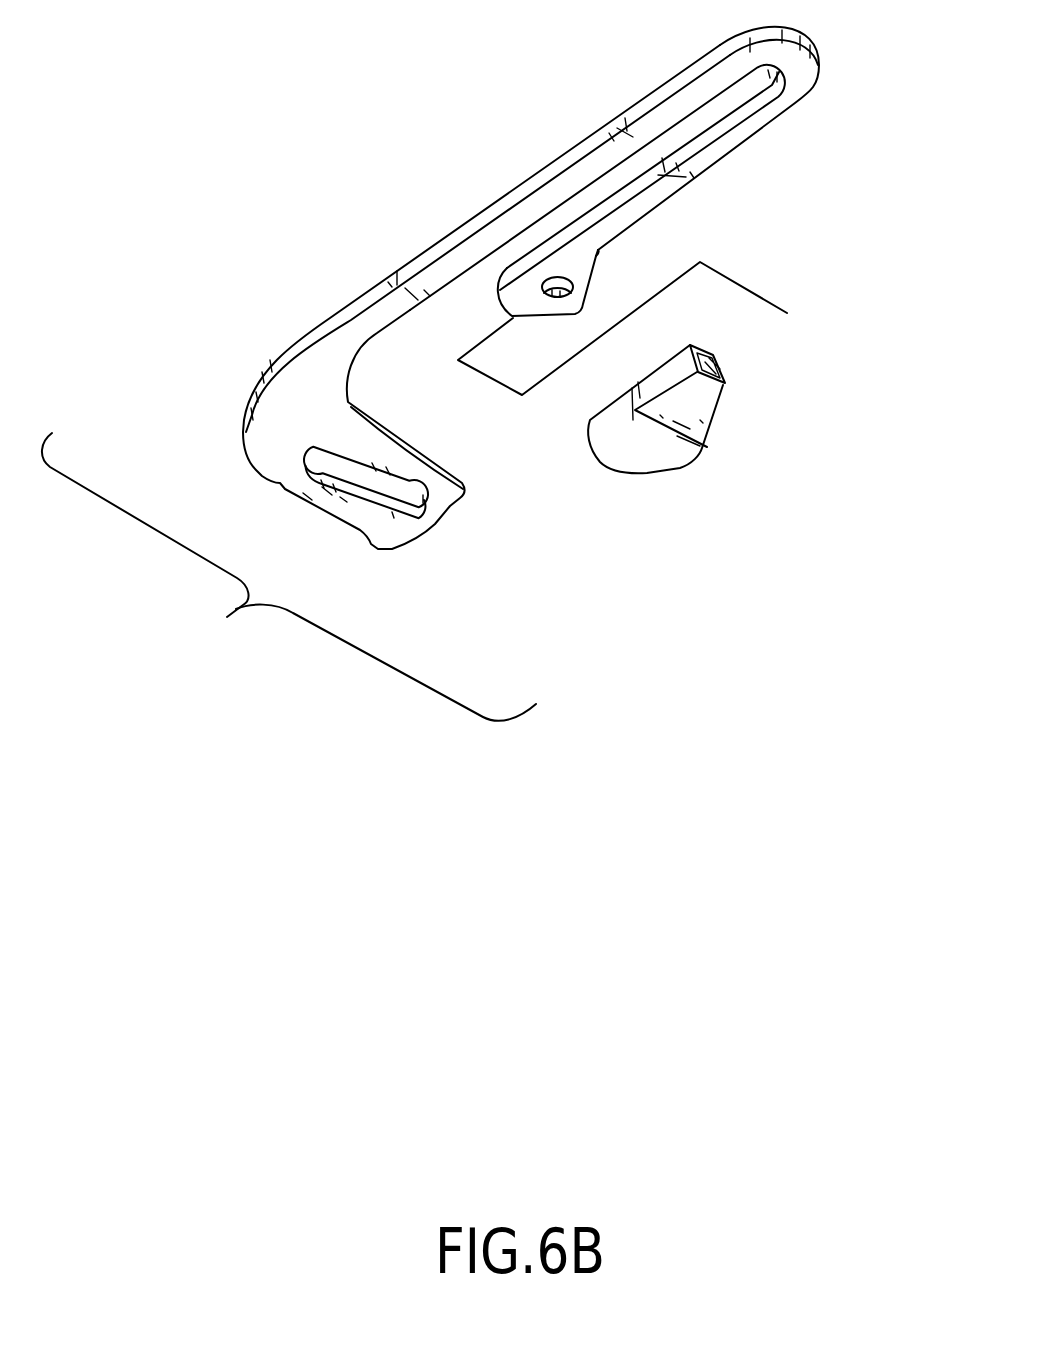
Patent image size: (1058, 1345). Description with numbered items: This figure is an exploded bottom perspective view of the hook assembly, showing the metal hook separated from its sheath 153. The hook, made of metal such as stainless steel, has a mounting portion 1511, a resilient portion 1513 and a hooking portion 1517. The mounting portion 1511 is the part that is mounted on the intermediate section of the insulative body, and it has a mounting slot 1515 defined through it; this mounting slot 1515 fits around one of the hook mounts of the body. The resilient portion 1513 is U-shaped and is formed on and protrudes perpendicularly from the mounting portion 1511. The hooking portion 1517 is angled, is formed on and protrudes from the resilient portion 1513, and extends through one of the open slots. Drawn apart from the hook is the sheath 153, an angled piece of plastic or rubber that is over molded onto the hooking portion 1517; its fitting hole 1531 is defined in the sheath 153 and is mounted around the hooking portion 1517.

The mounting portion 1511 is at (273, 407).
The resilient portion 1513 is at (710, 162).
The mounting slot 1515 is at (383, 488).
The hooking portion 1517 is at (523, 297).
The sheath 153 is at (697, 440).
The fitting hole 1531 is at (724, 368).